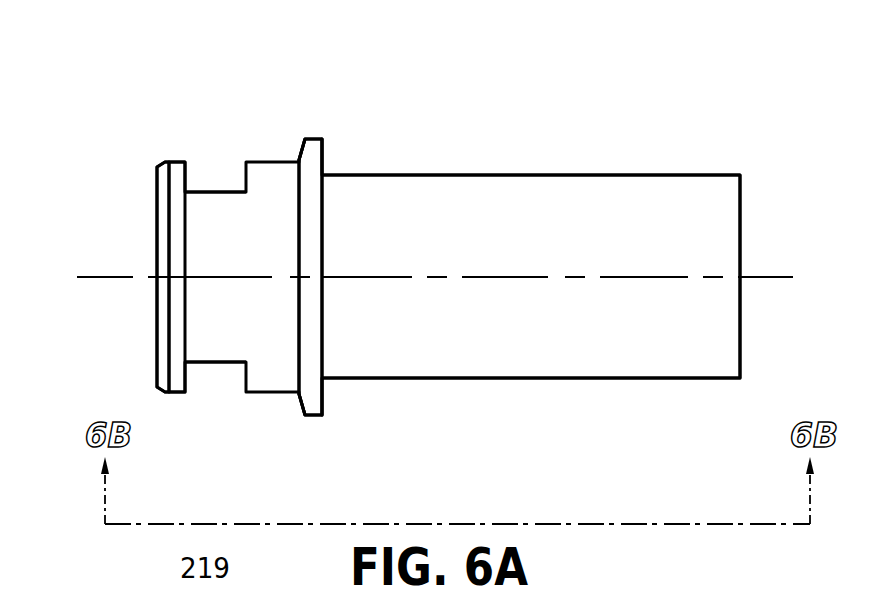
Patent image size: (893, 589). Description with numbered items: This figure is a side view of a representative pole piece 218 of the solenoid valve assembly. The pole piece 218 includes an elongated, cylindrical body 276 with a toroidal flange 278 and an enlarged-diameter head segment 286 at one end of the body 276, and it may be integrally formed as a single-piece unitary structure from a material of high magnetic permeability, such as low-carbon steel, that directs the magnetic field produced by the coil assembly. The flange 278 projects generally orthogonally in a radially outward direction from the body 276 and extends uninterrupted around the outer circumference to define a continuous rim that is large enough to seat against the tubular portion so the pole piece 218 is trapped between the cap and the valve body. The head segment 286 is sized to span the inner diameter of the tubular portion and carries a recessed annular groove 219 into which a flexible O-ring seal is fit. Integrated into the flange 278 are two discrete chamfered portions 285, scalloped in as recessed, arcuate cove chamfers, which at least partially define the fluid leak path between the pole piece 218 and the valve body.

The pole piece 218 is at (128, 132).
The recessed annular groove 219 is at (188, 191).
The elongated cylindrical body 276 is at (521, 175).
The toroidal flange 278 is at (311, 139).
The chamfered portion 285 is at (298, 150).
The enlarged-diameter head segment 286 is at (173, 161).